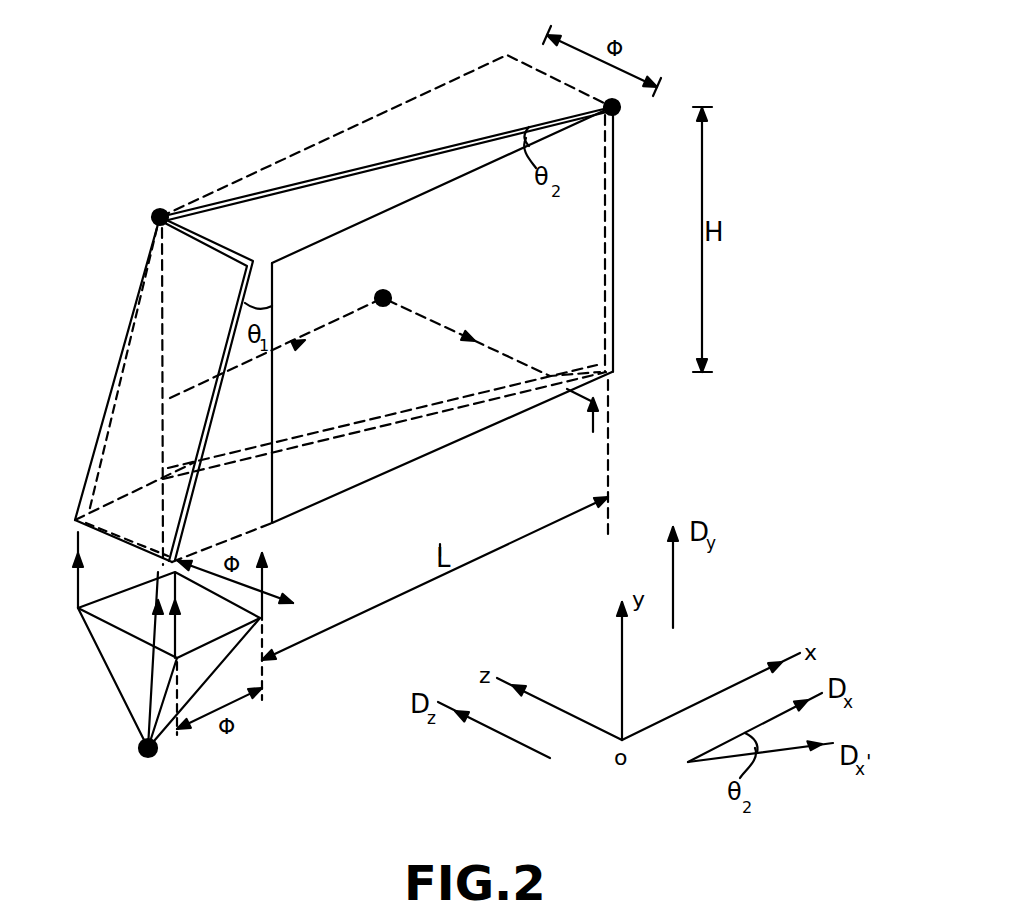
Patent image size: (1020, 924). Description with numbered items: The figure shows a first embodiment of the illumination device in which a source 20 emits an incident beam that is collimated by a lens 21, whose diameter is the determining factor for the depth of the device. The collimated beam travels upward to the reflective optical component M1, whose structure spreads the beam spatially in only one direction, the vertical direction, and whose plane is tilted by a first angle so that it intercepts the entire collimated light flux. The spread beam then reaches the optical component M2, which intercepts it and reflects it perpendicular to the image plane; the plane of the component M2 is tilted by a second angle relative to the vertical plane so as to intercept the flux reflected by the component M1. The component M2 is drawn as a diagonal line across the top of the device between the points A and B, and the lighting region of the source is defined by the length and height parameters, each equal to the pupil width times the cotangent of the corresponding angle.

The source 20 is at (146, 748).
The lens 21 is at (122, 616).
The optical component M1 is at (142, 408).
The optical component M2 is at (415, 152).
The point A is at (160, 217).
The point B is at (620, 108).